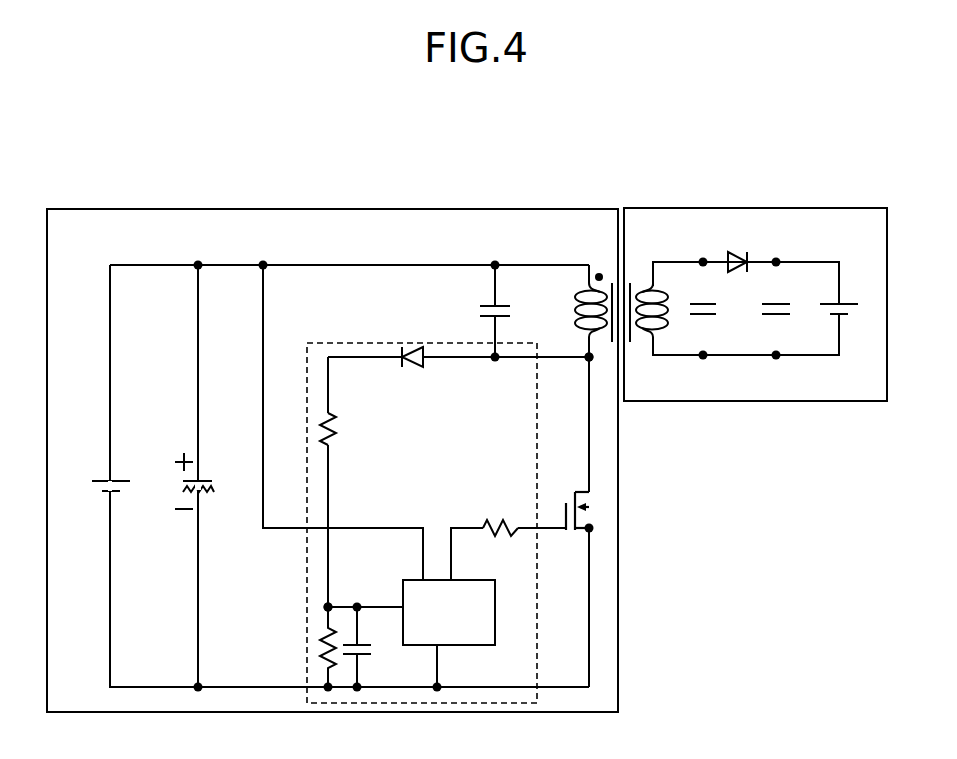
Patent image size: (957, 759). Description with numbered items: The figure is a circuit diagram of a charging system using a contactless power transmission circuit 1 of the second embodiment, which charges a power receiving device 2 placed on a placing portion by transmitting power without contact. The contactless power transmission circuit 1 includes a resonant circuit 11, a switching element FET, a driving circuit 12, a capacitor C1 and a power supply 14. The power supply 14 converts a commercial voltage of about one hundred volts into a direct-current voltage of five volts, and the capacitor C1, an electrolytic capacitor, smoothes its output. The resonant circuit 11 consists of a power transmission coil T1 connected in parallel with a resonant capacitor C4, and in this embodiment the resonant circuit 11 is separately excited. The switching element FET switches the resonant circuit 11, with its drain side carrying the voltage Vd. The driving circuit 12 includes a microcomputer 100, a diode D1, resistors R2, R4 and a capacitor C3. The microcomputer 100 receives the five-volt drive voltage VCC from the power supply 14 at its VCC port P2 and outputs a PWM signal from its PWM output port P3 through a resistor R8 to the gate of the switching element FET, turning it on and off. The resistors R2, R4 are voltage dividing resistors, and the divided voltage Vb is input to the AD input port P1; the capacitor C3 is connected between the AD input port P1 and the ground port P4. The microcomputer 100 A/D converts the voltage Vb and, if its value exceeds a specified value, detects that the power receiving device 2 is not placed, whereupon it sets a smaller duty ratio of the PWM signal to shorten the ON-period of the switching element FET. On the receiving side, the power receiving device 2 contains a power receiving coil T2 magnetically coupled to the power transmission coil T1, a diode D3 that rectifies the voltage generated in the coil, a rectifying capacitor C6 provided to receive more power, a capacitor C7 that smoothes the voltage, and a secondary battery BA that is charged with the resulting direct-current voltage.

The contactless power transmission circuit 1 is at (378, 209).
The power receiving device 2 is at (820, 208).
The resonant circuit 11 is at (555, 286).
The driving circuit 12 is at (540, 613).
The power supply 14 is at (118, 481).
The microcomputer 100 is at (495, 633).
The capacitor C1 is at (180, 476).
The capacitor C3 is at (368, 647).
The resonant capacitor C4 is at (507, 311).
The capacitor C6 is at (713, 324).
The capacitor C7 is at (785, 296).
The diode D1 is at (410, 371).
The diode D3 is at (735, 249).
The resistor R2 is at (344, 429).
The resistor R4 is at (322, 649).
The resistor R8 is at (500, 514).
The power transmission coil T1 is at (592, 311).
The power receiving coil T2 is at (662, 308).
The secondary battery BA is at (847, 324).
The switching element FET is at (557, 501).
The voltage Vd is at (575, 370).
The voltage Vb is at (347, 595).
The drive voltage VCC is at (394, 554).
The AD input port P1 is at (403, 612).
The VCC port P2 is at (434, 578).
The PWM output port P3 is at (468, 592).
The ground port P4 is at (437, 646).